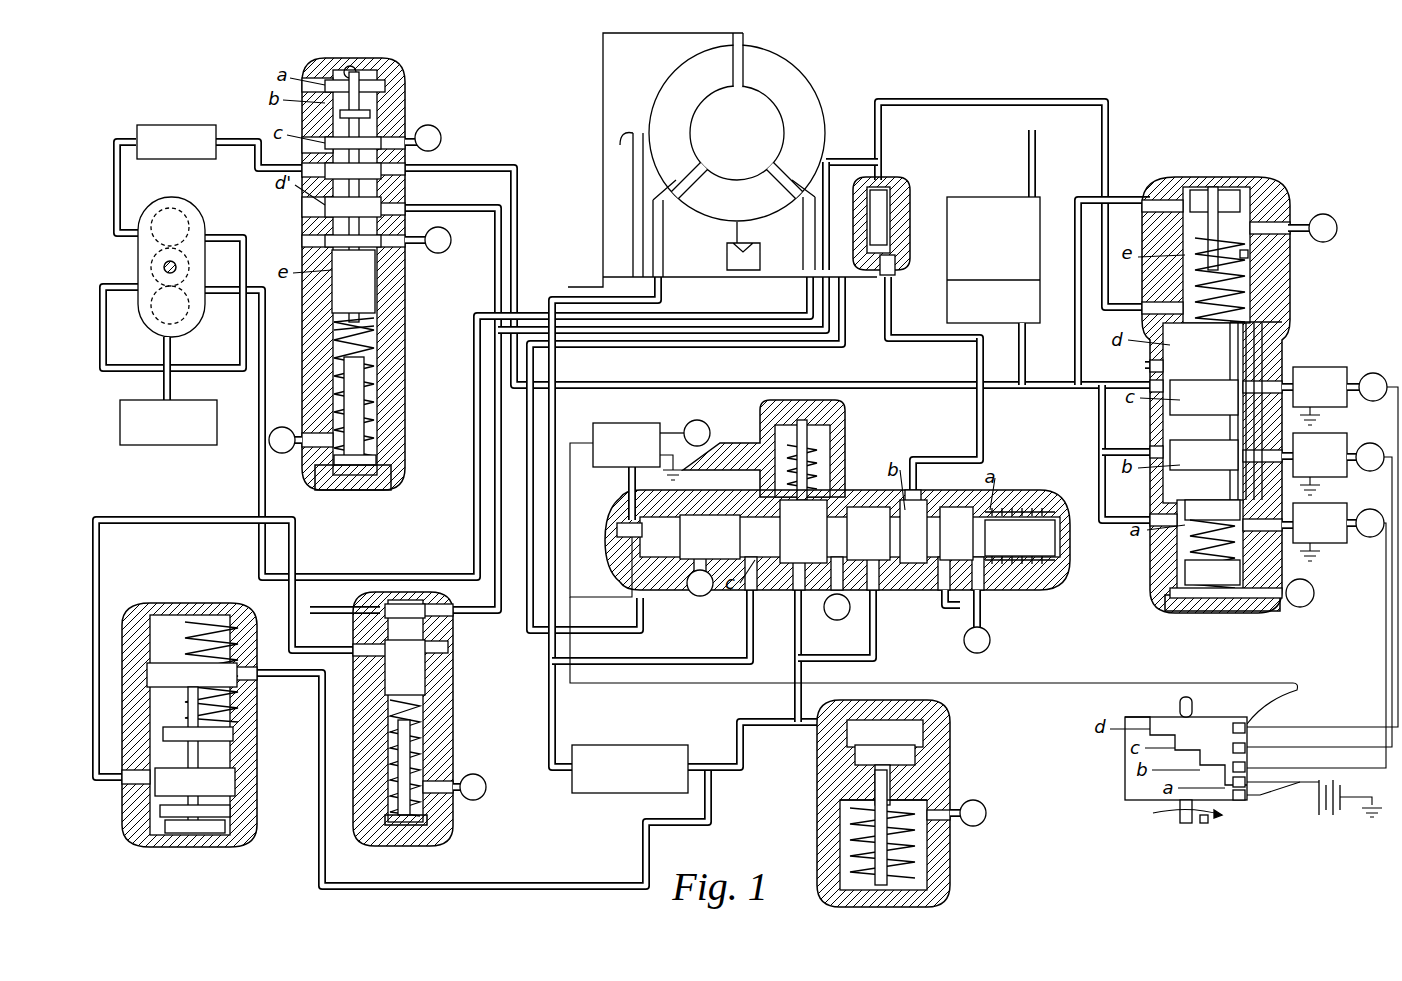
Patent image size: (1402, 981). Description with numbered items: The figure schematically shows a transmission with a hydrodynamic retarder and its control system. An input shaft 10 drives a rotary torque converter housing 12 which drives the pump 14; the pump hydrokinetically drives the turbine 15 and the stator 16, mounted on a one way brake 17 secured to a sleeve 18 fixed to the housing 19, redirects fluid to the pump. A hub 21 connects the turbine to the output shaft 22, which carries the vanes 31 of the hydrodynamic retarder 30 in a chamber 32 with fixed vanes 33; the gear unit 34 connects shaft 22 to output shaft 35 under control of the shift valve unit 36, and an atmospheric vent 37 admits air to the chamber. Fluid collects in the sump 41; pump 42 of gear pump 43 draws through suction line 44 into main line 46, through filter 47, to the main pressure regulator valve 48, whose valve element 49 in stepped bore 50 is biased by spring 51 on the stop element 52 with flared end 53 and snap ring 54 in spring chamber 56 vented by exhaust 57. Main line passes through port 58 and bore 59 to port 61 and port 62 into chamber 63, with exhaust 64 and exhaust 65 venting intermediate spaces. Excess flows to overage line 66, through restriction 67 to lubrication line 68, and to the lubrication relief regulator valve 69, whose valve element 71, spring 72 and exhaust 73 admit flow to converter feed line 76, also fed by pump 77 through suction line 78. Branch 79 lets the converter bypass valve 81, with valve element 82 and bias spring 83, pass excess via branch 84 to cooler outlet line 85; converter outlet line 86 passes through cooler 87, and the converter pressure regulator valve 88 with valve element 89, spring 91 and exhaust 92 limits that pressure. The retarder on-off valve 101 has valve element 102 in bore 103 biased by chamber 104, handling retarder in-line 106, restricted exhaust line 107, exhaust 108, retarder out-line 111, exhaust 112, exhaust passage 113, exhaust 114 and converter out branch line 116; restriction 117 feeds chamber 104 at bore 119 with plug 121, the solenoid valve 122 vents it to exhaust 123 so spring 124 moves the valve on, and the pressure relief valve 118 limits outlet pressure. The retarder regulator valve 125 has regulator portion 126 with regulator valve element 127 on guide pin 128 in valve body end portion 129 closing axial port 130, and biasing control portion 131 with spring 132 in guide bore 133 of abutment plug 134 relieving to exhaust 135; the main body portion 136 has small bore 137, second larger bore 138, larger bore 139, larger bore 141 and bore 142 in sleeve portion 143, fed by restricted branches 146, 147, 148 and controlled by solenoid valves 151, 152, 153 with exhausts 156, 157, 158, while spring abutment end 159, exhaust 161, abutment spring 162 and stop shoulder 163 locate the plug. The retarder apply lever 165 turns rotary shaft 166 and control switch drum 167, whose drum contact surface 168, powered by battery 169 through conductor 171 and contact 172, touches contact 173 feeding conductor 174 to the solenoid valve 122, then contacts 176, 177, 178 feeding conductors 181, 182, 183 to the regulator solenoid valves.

The input shaft 10 is at (590, 276).
The rotary torque converter housing 12 is at (727, 33).
The pump 14 is at (793, 85).
The turbine 15 is at (687, 76).
The stator 16 is at (720, 196).
The one way brake 17 is at (725, 266).
The sleeve 18 is at (800, 262).
The transmission housing 19 is at (873, 200).
The hub 21 is at (622, 135).
The torque converter output shaft 22 is at (680, 277).
The hydrodynamic retarder 30 is at (915, 183).
The vanes 31 is at (880, 195).
The chamber 32 is at (888, 220).
The fixed vanes 33 is at (895, 250).
The gear unit 34 is at (990, 200).
The output shaft 35 is at (1045, 283).
The shift valve unit 36 is at (950, 313).
The atmospheric vent 37 is at (893, 270).
The sump 41 is at (125, 420).
The pump 42 is at (178, 222).
The gear pump 43 is at (178, 330).
The suction line 44 is at (248, 255).
The main line 46 is at (117, 140).
The filter 47 is at (172, 125).
The main pressure regulator valve 48 is at (312, 60).
The valve element 49 is at (330, 222).
The stepped bore 50 is at (370, 280).
The spring 51 is at (375, 395).
The combined spring seat and stop element 52 is at (364, 410).
The flared end 53 is at (375, 460).
The snap ring 54 is at (392, 478).
The spring chamber 56 is at (375, 345).
The exhaust 57 is at (280, 427).
The port 58 is at (380, 182).
The bore 59 is at (380, 118).
The port 61 is at (385, 92).
The port 62 is at (349, 66).
The chamber 63 is at (380, 64).
The exhaust 64 is at (442, 132).
The exhaust 65 is at (445, 253).
The overage line 66 is at (460, 208).
The restriction 67 is at (345, 610).
The lubrication line 68 is at (1030, 133).
The lubrication relief regulator valve 69 is at (463, 695).
The valve element 71 is at (425, 662).
The spring 72 is at (425, 720).
The exhaust 73 is at (485, 780).
The converter feed line 76 is at (240, 300).
The pump 77 is at (160, 318).
The suction line 78 is at (132, 285).
The branch 79 is at (100, 523).
The converter bypass valve 81 is at (262, 782).
The valve element 82 is at (232, 740).
The bias spring 83 is at (185, 632).
The branch 84 is at (285, 676).
The cooler outlet line 85 is at (738, 760).
The converter outlet line 86 is at (552, 297).
The cooler 87 is at (630, 745).
The converter pressure regulator valve 88 is at (955, 732).
The valve element 89 is at (850, 800).
The spring 91 is at (865, 822).
The exhaust 92 is at (980, 800).
The retarder on-off valve 101 is at (1015, 488).
The valve element 102 is at (935, 515).
The bore 103 is at (917, 560).
The chamber 104 is at (622, 523).
The retarder in-line 106 is at (1078, 200).
The restricted exhaust line 107 is at (940, 610).
The exhaust 108 is at (968, 645).
The retarder out-line 111 is at (840, 344).
The exhaust 112 is at (832, 612).
The exhaust passage 113 is at (770, 435).
The exhaust 114 is at (706, 593).
The converter out branch line 116 is at (650, 663).
The restriction 117 is at (630, 577).
The pressure relief valve 118 is at (822, 445).
The bore 119 is at (632, 530).
The plug 121 is at (710, 520).
The solenoid valve 122 is at (612, 423).
The exhaust 123 is at (690, 420).
The spring 124 is at (1010, 513).
The retarder regulator valve 125 is at (1275, 618).
The regulator portion 126 is at (1163, 182).
The regulator valve element 127 is at (1222, 212).
The guide pin 128 is at (1270, 223).
The valve body end portion 129 is at (1200, 180).
The axial port 130 is at (1218, 190).
The biasing control portion 131 is at (1295, 277).
The spring 132 is at (1250, 290).
The guide bore 133 is at (1250, 318).
The abutment plug 134 is at (1262, 350).
The exhaust 135 is at (1333, 216).
The main body portion 136 is at (1178, 590).
The small bore 137 is at (1180, 570).
The second larger bore 138 is at (1165, 492).
The larger bore 139 is at (1170, 430).
The larger bore 141 is at (1145, 367).
The bore 142 is at (1160, 290).
The sleeve portion 143 is at (1165, 240).
The restricted branch 146 is at (1102, 522).
The restricted branch 147 is at (1110, 453).
The restricted branch 148 is at (1100, 390).
The solenoid valve 151 is at (1335, 367).
The solenoid valve 152 is at (1340, 477).
The solenoid valve 153 is at (1337, 545).
The exhaust 156 is at (1375, 372).
The exhaust 157 is at (1385, 450).
The exhaust 158 is at (1375, 538).
The spring abutment end 159 is at (1175, 615).
The exhaust 161 is at (1312, 605).
The abutment spring 162 is at (1240, 605).
The stop shoulder 163 is at (1250, 252).
The retarder apply lever 165 is at (1200, 823).
The rotary shaft 166 is at (1178, 812).
The control switch drum 167 is at (1160, 718).
The drum contact surface 168 is at (1125, 762).
The battery 169 is at (1345, 812).
The conductor 171 is at (1340, 792).
The contact 172 is at (1245, 800).
The contact 173 is at (1262, 790).
The conductor 174 is at (1305, 699).
The contact 176 is at (1235, 767).
The contact 177 is at (1238, 742).
The contact 178 is at (1245, 725).
The conductor 181 is at (1300, 768).
The conductor 182 is at (1300, 747).
The conductor 183 is at (1300, 727).